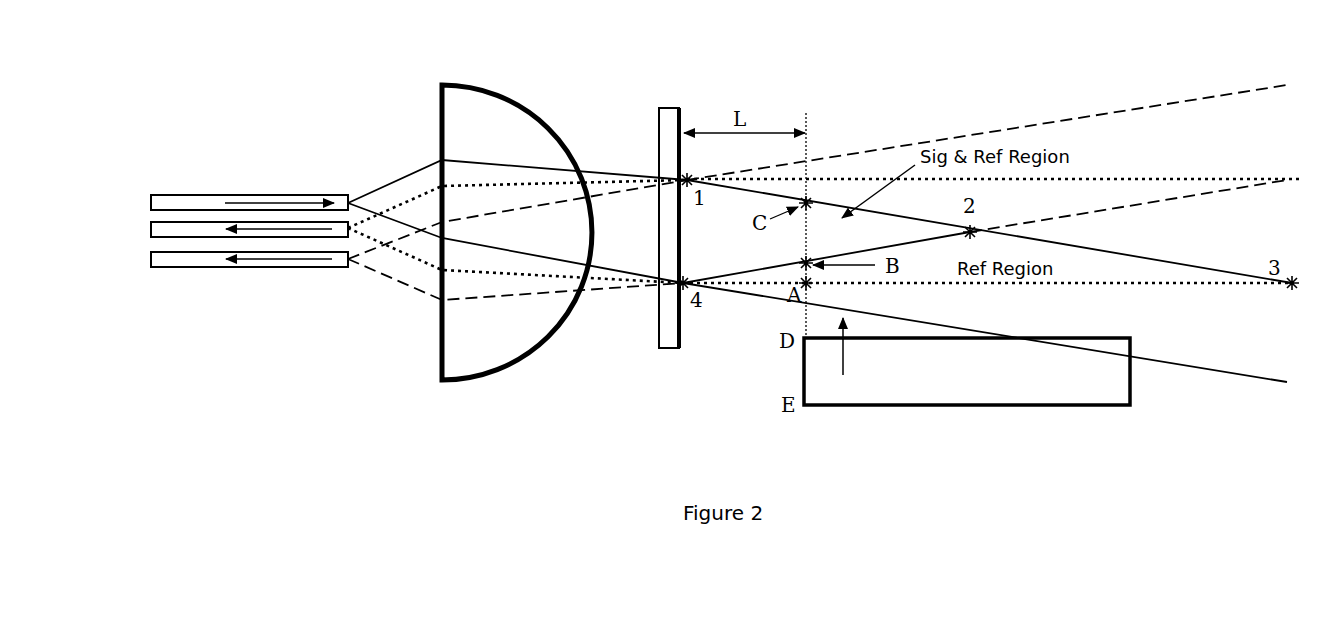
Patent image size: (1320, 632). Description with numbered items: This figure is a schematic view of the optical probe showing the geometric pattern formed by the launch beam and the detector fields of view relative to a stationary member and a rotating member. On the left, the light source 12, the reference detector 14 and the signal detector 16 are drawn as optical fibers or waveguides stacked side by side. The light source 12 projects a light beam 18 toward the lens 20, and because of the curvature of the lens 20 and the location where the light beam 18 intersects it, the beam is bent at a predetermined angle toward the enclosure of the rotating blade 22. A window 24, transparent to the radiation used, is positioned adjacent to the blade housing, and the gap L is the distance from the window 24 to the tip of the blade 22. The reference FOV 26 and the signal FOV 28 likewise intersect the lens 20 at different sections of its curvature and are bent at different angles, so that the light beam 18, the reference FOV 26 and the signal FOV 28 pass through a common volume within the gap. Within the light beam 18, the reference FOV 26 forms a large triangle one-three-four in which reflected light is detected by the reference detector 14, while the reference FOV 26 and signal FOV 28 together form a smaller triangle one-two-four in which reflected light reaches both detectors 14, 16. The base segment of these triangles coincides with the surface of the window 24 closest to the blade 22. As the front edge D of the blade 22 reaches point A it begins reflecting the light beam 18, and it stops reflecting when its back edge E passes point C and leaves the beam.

The light source 12 is at (222, 196).
The reference detector 14 is at (152, 223).
The signal detector 16 is at (187, 268).
The light beam 18 is at (400, 178).
The lens 20 is at (492, 130).
The rotating blade 22 is at (998, 392).
The window 24 is at (667, 128).
The reference FOV 26 is at (423, 233).
The signal FOV 28 is at (377, 270).